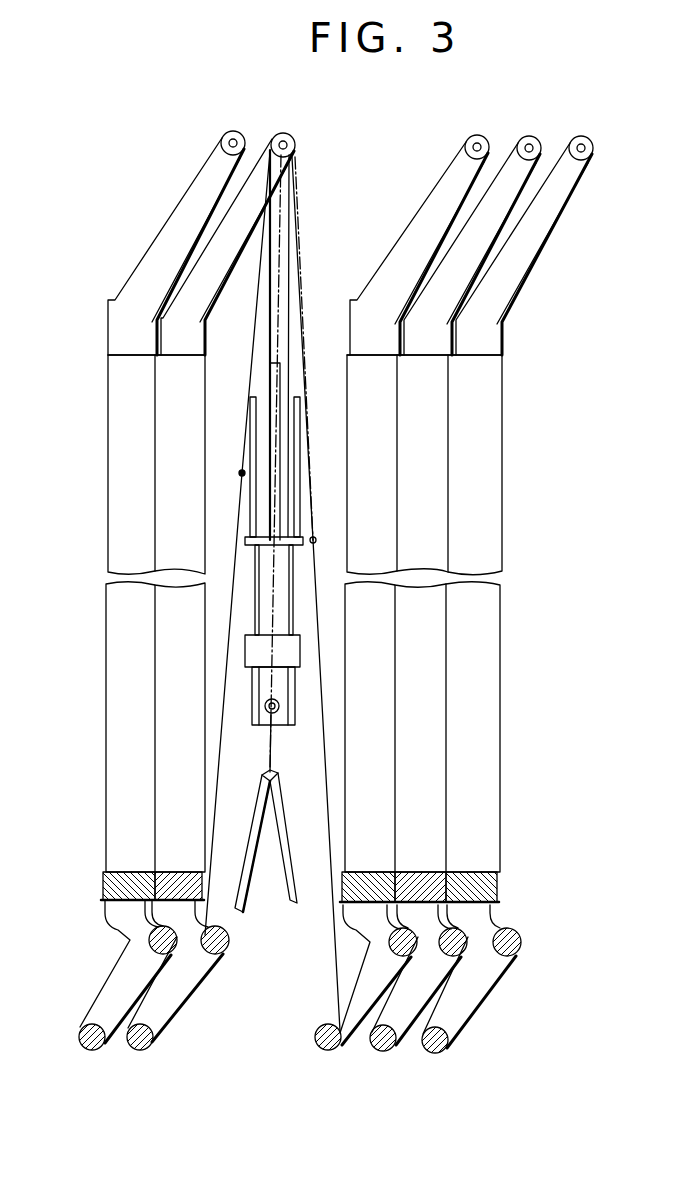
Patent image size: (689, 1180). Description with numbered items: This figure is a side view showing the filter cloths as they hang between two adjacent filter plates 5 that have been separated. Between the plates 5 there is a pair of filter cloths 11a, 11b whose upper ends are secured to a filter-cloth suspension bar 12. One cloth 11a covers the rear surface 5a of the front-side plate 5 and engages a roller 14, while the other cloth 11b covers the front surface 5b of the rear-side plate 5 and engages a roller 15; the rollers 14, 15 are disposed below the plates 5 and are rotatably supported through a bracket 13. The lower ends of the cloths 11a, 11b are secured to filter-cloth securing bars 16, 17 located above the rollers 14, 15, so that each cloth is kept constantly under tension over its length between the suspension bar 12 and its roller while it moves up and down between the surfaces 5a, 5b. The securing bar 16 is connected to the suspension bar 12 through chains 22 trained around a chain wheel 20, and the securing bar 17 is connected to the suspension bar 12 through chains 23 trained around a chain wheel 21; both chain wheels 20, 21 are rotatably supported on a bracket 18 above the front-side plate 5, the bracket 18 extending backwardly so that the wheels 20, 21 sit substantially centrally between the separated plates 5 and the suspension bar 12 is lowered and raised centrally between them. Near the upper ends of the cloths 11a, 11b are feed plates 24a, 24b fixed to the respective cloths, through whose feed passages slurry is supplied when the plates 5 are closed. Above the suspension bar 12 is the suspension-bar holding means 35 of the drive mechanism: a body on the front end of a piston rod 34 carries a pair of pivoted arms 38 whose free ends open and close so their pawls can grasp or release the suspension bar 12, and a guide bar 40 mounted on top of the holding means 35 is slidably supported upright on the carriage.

The filter plate 5 is at (115, 792).
The rear surface of front-side filter plate 5a is at (212, 552).
The front surface of rear-side filter plate 5b is at (340, 698).
The filter cloth 11a is at (219, 764).
The filter cloth 11b is at (326, 772).
The filter-cloth suspension bar 12 is at (265, 714).
The bracket 13 is at (185, 988).
The roller 14 is at (236, 912).
The roller 15 is at (158, 1037).
The filter-cloth securing bar 16 is at (240, 473).
The filter-cloth securing bar 17 is at (316, 540).
The bracket 18 is at (242, 220).
The chain wheel 20 is at (477, 135).
The chain wheel 21 is at (283, 133).
The chain 22 is at (288, 302).
The chain 23 is at (303, 262).
The feed plate 24a is at (272, 1018).
The feed plate 24b is at (285, 860).
The piston rod 34 is at (282, 368).
The filter-cloth suspension-bar holding means 35 is at (285, 596).
The arm 38 is at (252, 690).
The guide bar 40 is at (252, 422).